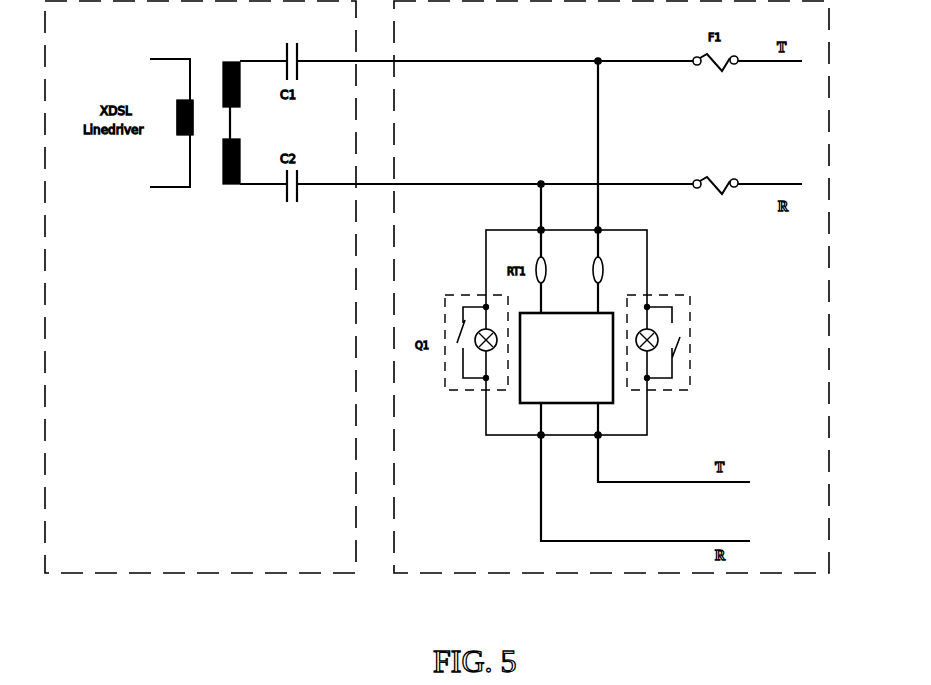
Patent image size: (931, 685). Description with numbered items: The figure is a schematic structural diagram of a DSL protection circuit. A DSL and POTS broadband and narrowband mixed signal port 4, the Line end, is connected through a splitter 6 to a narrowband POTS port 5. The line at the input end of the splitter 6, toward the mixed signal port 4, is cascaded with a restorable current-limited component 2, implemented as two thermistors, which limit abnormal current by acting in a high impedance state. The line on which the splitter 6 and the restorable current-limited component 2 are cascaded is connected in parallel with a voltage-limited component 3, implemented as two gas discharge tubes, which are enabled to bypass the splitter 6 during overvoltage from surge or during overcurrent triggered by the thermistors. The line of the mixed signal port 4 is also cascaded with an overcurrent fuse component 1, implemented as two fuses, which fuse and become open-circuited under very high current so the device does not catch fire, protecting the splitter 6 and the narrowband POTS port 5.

The overcurrent fuse component 1 is at (738, 188).
The restorable current-limited component 2 is at (603, 265).
The voltage-limited component 3 is at (690, 390).
The DSL and POTS broadband and narrowband mixed signal port 4 is at (795, 127).
The narrowband POTS port 5 is at (787, 517).
The splitter 6 is at (598, 375).